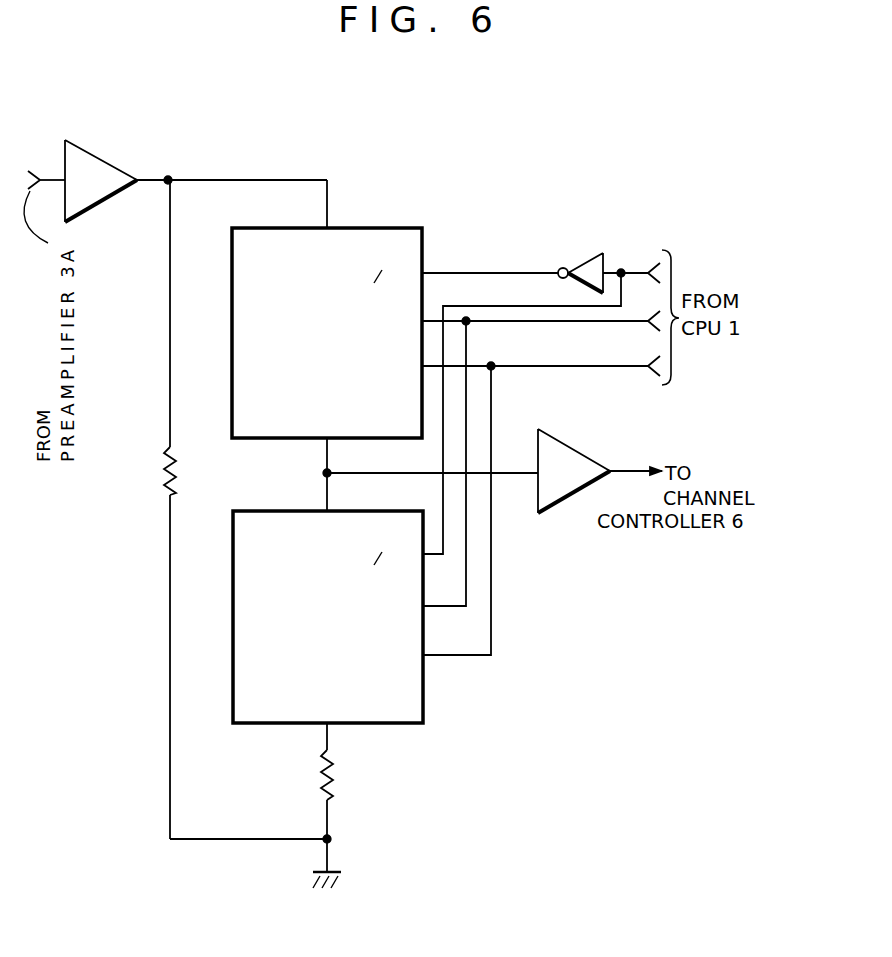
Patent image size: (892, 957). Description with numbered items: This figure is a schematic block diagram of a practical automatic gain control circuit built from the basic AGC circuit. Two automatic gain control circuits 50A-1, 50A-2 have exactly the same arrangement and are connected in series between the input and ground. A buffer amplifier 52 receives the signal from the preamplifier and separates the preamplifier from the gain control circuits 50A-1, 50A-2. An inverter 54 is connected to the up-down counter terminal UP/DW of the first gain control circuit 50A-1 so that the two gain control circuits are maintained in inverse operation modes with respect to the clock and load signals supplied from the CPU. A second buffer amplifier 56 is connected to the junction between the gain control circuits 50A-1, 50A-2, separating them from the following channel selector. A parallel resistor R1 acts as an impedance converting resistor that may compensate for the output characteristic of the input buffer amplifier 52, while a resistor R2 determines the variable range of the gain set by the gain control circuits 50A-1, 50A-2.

The buffer amplifier 52 is at (100, 159).
The inverter 54 is at (588, 262).
The buffer amplifier 56 is at (578, 452).
The automatic gain control circuit 50A-1 is at (383, 228).
The automatic gain control circuit 50A-2 is at (425, 700).
The parallel resistor R1 is at (179, 484).
The resistor R2 is at (330, 783).